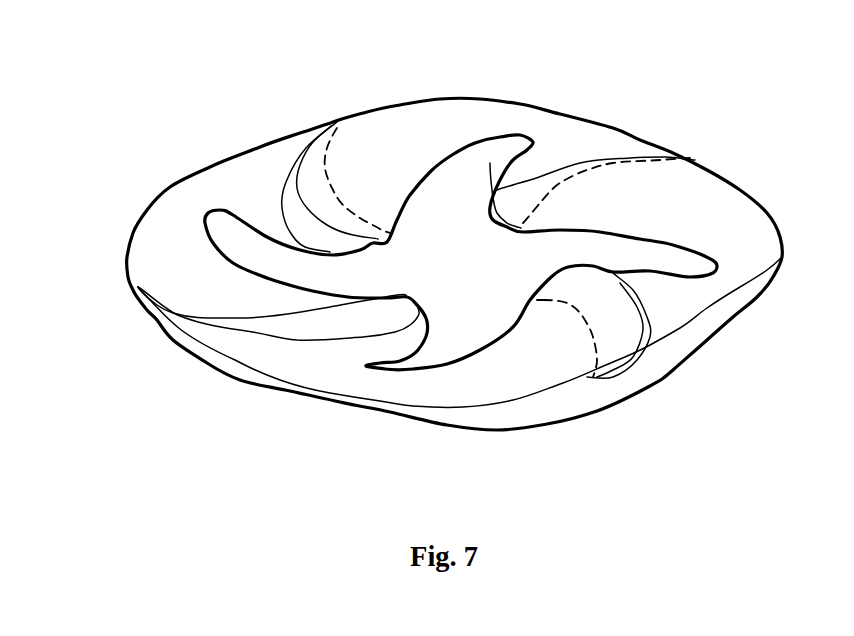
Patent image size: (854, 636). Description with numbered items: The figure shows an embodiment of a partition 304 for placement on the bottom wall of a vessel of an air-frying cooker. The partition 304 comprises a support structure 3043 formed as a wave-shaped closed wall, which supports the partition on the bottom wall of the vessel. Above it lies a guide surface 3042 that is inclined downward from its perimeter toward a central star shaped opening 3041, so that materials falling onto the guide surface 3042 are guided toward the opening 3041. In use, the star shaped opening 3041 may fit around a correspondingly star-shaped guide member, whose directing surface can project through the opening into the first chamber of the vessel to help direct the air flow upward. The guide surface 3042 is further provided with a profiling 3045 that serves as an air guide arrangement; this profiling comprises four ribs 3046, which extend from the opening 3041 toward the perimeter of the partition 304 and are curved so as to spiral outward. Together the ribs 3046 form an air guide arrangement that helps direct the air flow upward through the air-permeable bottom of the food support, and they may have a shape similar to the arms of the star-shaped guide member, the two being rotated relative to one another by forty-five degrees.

The partition 304 is at (144, 114).
The star shaped opening 3041 is at (460, 237).
The guide surface 3042 is at (694, 203).
The support structure 3043 is at (650, 367).
The profiling 3045 is at (552, 356).
The ribs 3046 is at (290, 193).